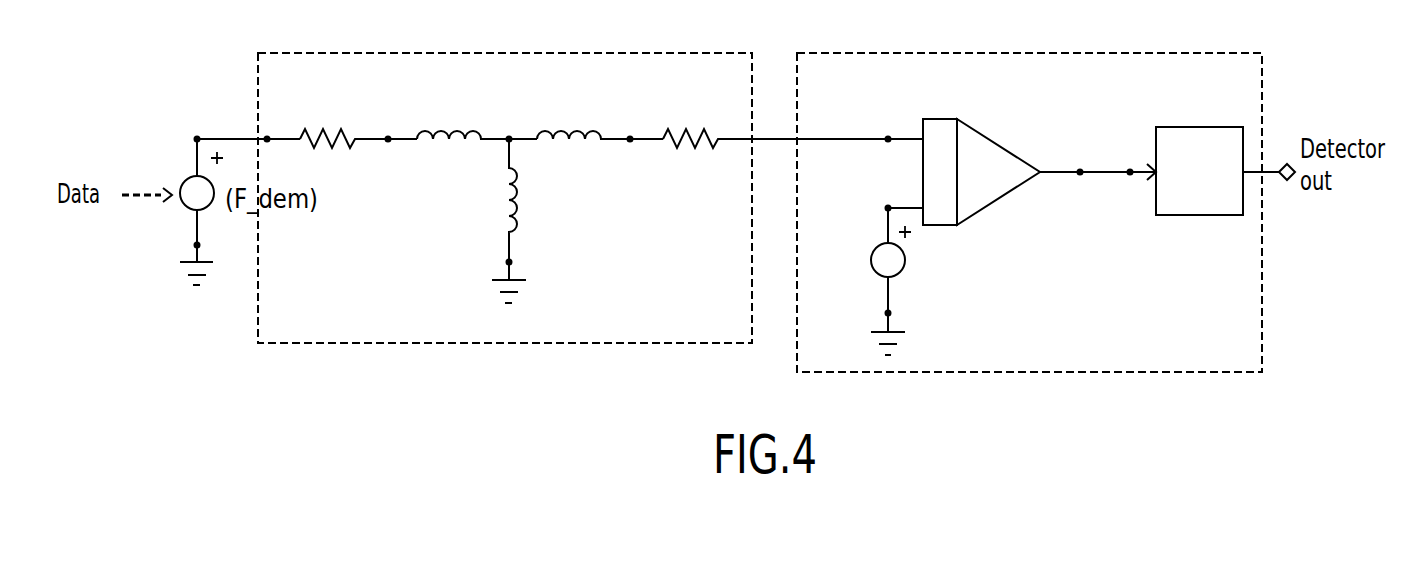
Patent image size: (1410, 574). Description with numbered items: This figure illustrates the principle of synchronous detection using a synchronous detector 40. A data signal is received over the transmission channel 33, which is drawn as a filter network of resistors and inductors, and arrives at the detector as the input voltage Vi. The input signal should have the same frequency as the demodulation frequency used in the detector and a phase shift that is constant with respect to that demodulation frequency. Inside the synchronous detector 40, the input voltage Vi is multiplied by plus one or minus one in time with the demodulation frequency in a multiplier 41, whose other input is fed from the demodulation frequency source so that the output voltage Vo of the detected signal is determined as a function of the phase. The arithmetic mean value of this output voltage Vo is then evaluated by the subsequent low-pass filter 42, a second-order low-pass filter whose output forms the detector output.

The transmission channel 33 is at (422, 328).
The synchronous detector 40 is at (1127, 357).
The multiplier 41 is at (977, 145).
The low-pass filter 42 is at (1195, 132).